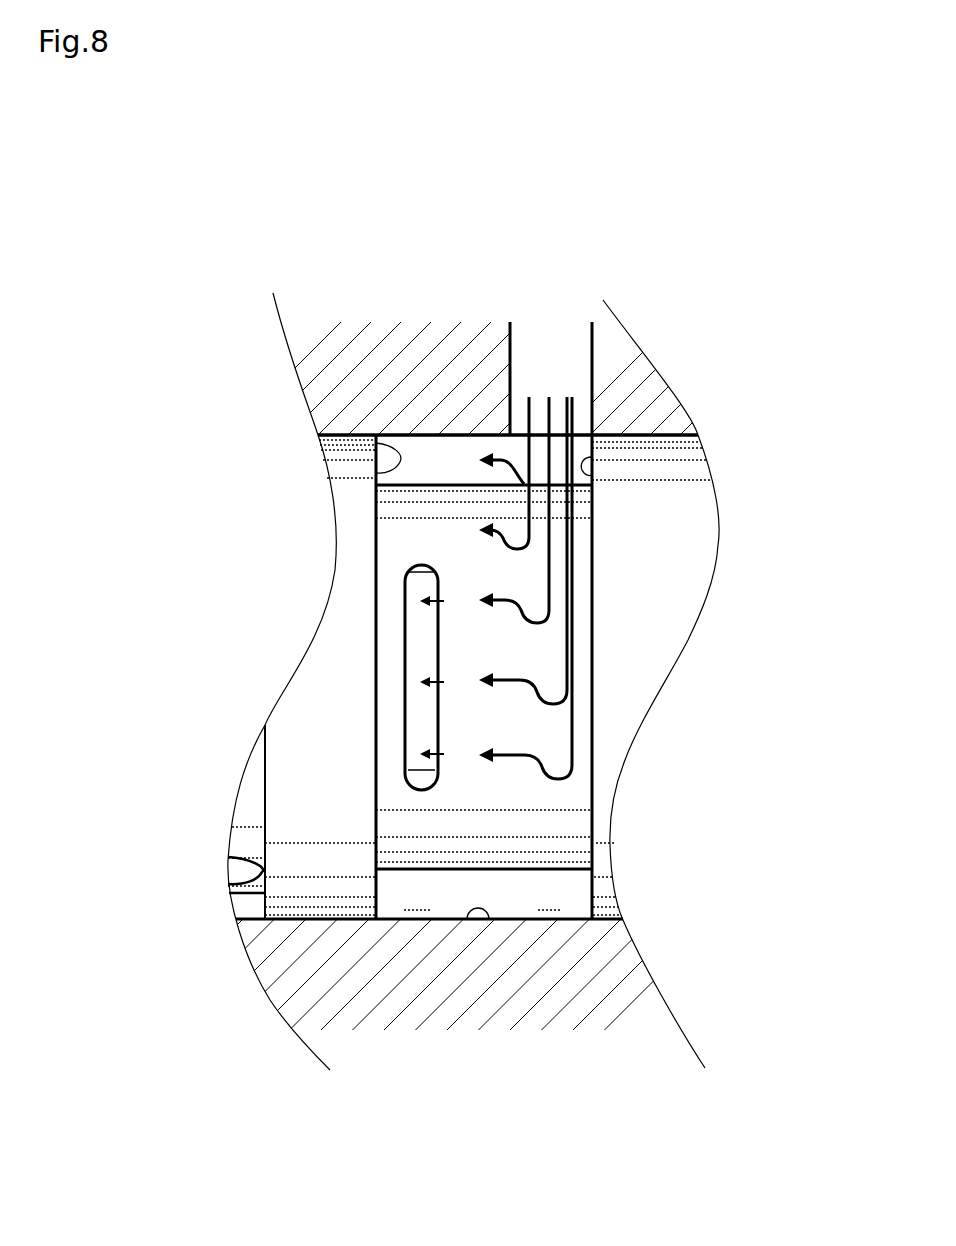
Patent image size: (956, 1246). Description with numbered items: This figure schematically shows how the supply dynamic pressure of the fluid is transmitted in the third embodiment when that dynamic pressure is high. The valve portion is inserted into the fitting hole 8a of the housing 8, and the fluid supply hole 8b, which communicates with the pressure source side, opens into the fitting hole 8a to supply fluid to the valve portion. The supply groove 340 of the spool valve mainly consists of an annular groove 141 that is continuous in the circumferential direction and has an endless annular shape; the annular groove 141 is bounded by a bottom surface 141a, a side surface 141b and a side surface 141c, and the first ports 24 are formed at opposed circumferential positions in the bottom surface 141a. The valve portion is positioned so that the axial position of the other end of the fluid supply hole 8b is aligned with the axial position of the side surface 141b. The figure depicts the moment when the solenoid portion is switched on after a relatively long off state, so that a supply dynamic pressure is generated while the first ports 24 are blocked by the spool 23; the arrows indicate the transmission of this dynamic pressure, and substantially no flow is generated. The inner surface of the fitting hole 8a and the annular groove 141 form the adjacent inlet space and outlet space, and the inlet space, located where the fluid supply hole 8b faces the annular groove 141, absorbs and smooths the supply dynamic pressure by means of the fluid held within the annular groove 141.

The housing 8 is at (620, 357).
The fitting hole 8a is at (488, 921).
The fluid supply hole 8b is at (568, 367).
The annular groove 141 is at (424, 593).
The supply groove 340 is at (459, 460).
The bottom surface 141a is at (427, 483).
The side surface 141b is at (588, 460).
The side surface 141c is at (366, 441).
The spool 23 is at (420, 735).
The first ports 24 is at (405, 668).